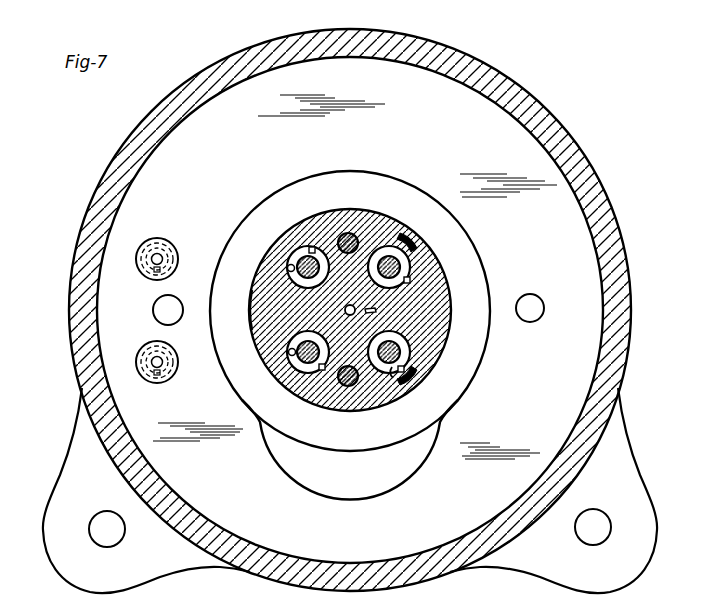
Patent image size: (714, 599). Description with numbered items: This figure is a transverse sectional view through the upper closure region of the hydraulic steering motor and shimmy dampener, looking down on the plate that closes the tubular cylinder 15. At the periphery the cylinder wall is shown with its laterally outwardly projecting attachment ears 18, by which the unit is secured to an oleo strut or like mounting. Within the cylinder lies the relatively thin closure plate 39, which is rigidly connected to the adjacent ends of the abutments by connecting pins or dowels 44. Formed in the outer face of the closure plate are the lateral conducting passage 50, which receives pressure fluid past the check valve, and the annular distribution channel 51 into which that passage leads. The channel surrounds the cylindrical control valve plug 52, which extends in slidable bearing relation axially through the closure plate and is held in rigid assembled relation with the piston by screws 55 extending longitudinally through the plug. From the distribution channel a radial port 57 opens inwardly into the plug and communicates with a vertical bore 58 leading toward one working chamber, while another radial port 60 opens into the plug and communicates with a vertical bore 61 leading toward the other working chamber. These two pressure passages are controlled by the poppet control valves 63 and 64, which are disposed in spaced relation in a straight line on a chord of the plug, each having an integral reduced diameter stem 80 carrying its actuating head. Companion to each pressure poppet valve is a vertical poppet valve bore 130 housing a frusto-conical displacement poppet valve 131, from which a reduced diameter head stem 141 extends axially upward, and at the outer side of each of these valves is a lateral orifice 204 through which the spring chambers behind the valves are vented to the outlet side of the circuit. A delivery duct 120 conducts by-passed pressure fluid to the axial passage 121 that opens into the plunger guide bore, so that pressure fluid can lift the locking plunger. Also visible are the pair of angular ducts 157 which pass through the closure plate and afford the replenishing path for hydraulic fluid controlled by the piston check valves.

The tubular cylinder 15 is at (80, 348).
The attachment ears 18 is at (58, 527).
The closure plate 39 is at (246, 169).
The connecting pins 44 is at (173, 315).
The lateral conducting passage 50 is at (388, 509).
The annular distribution channel 51 is at (250, 221).
The control valve plug 52 is at (272, 357).
The screws 55 is at (352, 232).
The radial port 57 is at (285, 231).
The vertical bore 58 is at (313, 249).
The radial port 60 is at (419, 378).
The vertical bore 61 is at (397, 373).
The control valve 63 is at (288, 261).
The control valve 64 is at (408, 355).
The stem 80 is at (397, 267).
The delivery duct 120 is at (376, 312).
The axial passage 121 is at (354, 318).
The poppet valve bore 130 is at (325, 368).
The poppet valve 131 is at (322, 253).
The head stem 141 is at (289, 348).
The angular ducts 157 is at (162, 257).
The lateral orifices 204 is at (288, 270).